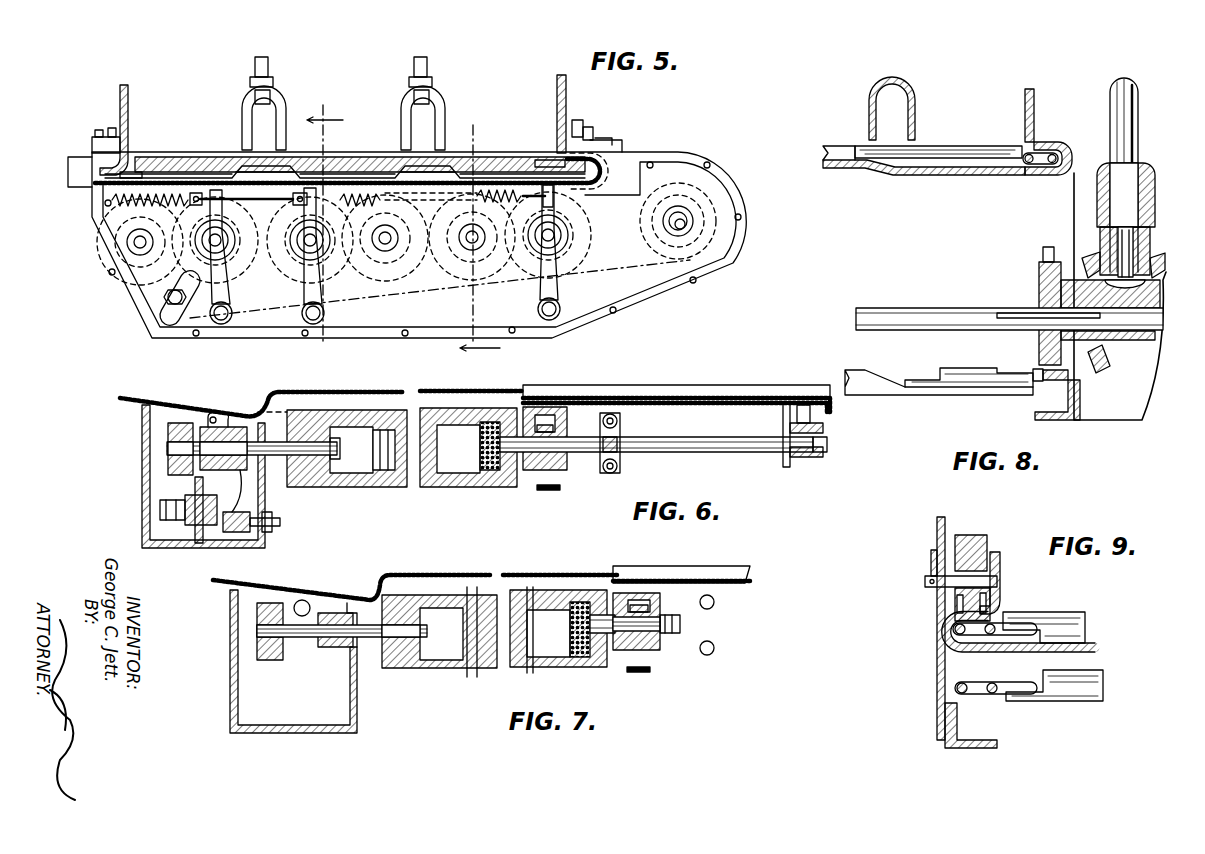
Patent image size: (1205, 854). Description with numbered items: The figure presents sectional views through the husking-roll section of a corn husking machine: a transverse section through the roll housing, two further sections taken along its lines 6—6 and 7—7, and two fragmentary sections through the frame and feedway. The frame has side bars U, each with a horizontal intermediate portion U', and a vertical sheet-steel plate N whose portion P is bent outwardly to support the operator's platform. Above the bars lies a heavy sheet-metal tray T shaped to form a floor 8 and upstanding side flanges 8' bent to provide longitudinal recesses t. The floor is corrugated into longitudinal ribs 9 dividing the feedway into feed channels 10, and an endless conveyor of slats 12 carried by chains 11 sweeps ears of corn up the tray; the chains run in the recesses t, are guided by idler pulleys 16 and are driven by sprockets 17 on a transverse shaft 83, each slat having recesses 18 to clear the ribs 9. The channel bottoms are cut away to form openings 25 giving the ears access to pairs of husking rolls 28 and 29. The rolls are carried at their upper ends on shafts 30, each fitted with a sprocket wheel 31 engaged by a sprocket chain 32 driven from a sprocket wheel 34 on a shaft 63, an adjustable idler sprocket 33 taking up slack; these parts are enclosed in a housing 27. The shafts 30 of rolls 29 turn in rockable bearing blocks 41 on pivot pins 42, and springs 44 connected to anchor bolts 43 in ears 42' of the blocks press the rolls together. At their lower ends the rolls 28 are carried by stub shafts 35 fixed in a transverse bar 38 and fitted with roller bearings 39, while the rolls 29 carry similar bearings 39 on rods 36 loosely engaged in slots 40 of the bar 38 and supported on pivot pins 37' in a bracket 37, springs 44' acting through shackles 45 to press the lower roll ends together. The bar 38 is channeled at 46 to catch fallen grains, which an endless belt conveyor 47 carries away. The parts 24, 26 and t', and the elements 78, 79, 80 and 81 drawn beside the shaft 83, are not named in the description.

In FIG. 5, the section line 6 is at (325, 232).
In FIG. 5, the section line 7 is at (480, 244).
In FIG. 5, the floor 8 is at (351, 155).
In FIG. 6, the floor 8 is at (676, 380).
In FIG. 7, the floor 8 is at (696, 577).
In FIG. 8, the floor 8 is at (1052, 118).
In FIG. 9, the floor 8 is at (1109, 641).
In FIG. 5, the side flanges 8' is at (341, 122).
In FIG. 9, the side flanges 8' is at (1017, 592).
In FIG. 5, the longitudinal ribs 9 is at (247, 177).
In FIG. 6, the longitudinal ribs 9 is at (438, 390).
In FIG. 7, the longitudinal ribs 9 is at (521, 572).
In FIG. 8, the longitudinal ribs 9 is at (892, 169).
In FIG. 6, the feed channels 10 is at (677, 389).
In FIG. 7, the feed channels 10 is at (718, 580).
In FIG. 5, the endless chains 11 is at (128, 172).
In FIG. 8, the endless chains 11 is at (1041, 165).
In FIG. 9, the endless chains 11 is at (1005, 637).
In FIG. 5, the slats 12 is at (338, 174).
In FIG. 8, the slats 12 is at (945, 146).
In FIG. 9, the slats 12 is at (1050, 612).
In FIG. 5, the idler pulleys 16 is at (113, 138).
In FIG. 9, the idler pulleys 16 is at (971, 545).
In FIG. 8, the sprockets 17 is at (1039, 267).
In FIG. 5, the recesses 18 is at (280, 167).
In FIG. 8, the recesses 18 is at (873, 155).
In FIG. 5, the hanger 24 is at (277, 92).
In FIG. 8, the hanger 24 is at (916, 97).
In FIG. 7, the opening 25 is at (633, 602).
In FIG. 5, the spring / bearing housing 26 is at (148, 197).
In FIG. 6, the spring / bearing housing 26 is at (300, 410).
In FIG. 7, the spring / bearing housing 26 is at (381, 593).
In FIG. 6, the housing 27 is at (147, 407).
In FIG. 7, the housing 27 is at (308, 735).
In FIG. 5, the husking rolls 28 is at (452, 250).
In FIG. 7, the husking rolls 28 is at (447, 670).
In FIG. 5, the husking rolls 29 is at (290, 250).
In FIG. 6, the husking rolls 29 is at (371, 488).
In FIG. 5, the shafts 30 is at (318, 250).
In FIG. 6, the shafts 30 is at (339, 449).
In FIG. 7, the shafts 30 is at (302, 640).
In FIG. 5, the sprocket wheel 31 is at (125, 242).
In FIG. 6, the sprocket wheel 31 is at (168, 440).
In FIG. 7, the sprocket wheel 31 is at (276, 645).
In FIG. 5, the sprocket chain 32 is at (440, 276).
In FIG. 5, the adjustable idler sprocket 33 is at (305, 212).
In FIG. 6, the adjustable idler sprocket 33 is at (176, 487).
In FIG. 5, the sprocket wheel 34 is at (505, 315).
In FIG. 7, the stub shafts 35 is at (622, 651).
In FIG. 6, the rod 36 is at (720, 452).
In FIG. 6, the transverse bracket 37 is at (797, 452).
In FIG. 6, the pivot pin 37' is at (846, 446).
In FIG. 6, the transverse bar 38 is at (566, 470).
In FIG. 7, the transverse bar 38 is at (658, 650).
In FIG. 6, the roller bearing 39 is at (489, 470).
In FIG. 7, the roller bearing 39 is at (582, 656).
In FIG. 6, the slot 40 is at (534, 470).
In FIG. 6, the rockable bearing blocks 41 is at (232, 428).
In FIG. 6, the pivot pins 42 is at (232, 545).
In FIG. 6, the ears 42' is at (215, 397).
In FIG. 5, the anchor bolts 43 is at (197, 193).
In FIG. 6, the anchor bolts 43 is at (226, 420).
In FIG. 5, the springs 44 is at (345, 148).
In FIG. 7, the springs 44 is at (307, 585).
In FIG. 6, the springs 44' is at (623, 498).
In FIG. 7, the springs 44' is at (725, 625).
In FIG. 6, the shackles 45 is at (621, 438).
In FIG. 6, the channel 46 is at (540, 414).
In FIG. 7, the channel 46 is at (632, 603).
In FIG. 6, the endless belt conveyor 47 is at (551, 420).
In FIG. 7, the endless belt conveyor 47 is at (643, 674).
In FIG. 5, the shaft 63 is at (681, 227).
In FIG. 8, the rod 78 is at (1122, 82).
In FIG. 8, the bushing 79 is at (1103, 181).
In FIG. 8, the housing 80 is at (1100, 260).
In FIG. 8, the lug 81 is at (1110, 360).
In FIG. 8, the transverse shaft 83 is at (906, 311).
In FIG. 5, the sheet metal tray T is at (128, 108).
In FIG. 8, the sheet metal tray T is at (1034, 122).
In FIG. 9, the sheet metal tray T is at (1000, 560).
In FIG. 5, the longitudinal recesses t is at (619, 144).
In FIG. 8, the longitudinal recesses t is at (1057, 133).
In FIG. 9, the longitudinal recesses t is at (1018, 648).
In FIG. 9, the track flange t' is at (922, 607).
In FIG. 9, the plate N is at (937, 533).
In FIG. 8, the portion of plate P is at (1127, 406).
In FIG. 8, the side bars U is at (1066, 437).
In FIG. 9, the side bars U is at (954, 767).
In FIG. 8, the horizontal intermediate portion U' is at (1036, 406).
In FIG. 9, the horizontal intermediate portion U' is at (971, 725).